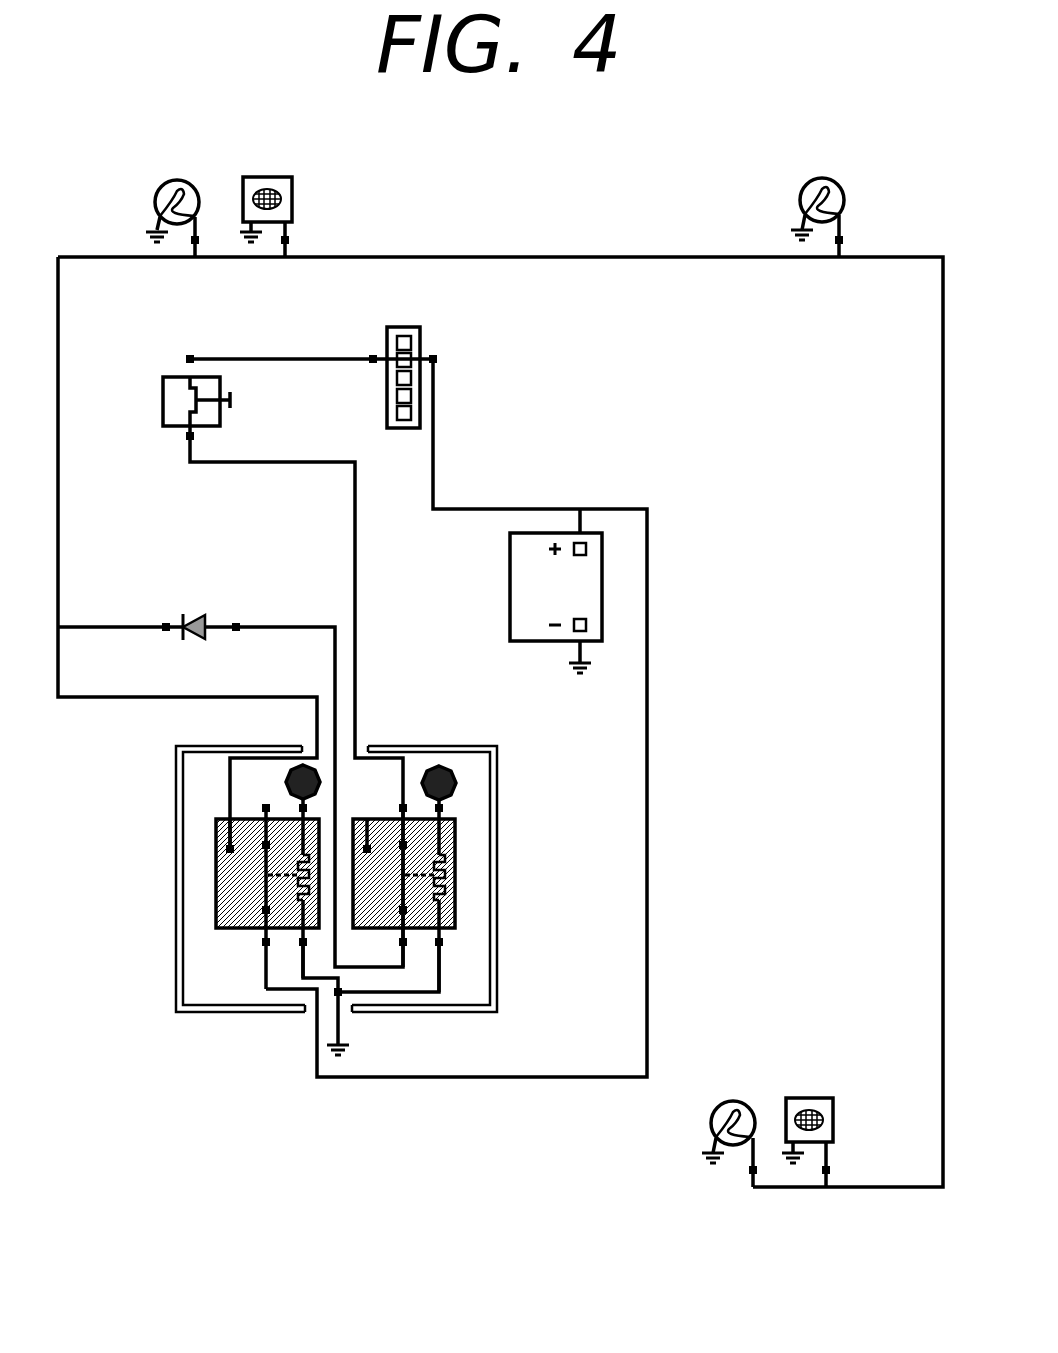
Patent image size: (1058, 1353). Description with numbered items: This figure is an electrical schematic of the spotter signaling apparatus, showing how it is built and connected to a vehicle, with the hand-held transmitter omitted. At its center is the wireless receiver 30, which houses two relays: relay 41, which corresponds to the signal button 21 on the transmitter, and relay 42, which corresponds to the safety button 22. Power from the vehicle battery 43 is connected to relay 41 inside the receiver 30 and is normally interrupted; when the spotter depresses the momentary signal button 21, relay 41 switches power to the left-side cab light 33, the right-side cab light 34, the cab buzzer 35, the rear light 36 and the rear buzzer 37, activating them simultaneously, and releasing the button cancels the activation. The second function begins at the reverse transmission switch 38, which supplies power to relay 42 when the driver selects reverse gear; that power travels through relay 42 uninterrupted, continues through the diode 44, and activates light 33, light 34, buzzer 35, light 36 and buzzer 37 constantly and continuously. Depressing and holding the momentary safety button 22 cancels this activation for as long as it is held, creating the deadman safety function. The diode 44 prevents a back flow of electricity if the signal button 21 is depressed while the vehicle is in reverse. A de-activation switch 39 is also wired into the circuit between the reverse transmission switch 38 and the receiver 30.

The signal button 21 is at (285, 778).
The safety button 22 is at (459, 779).
The wireless receiver 30 is at (230, 983).
The left-side cab light 33 is at (165, 178).
The right-side cab light 34 is at (832, 178).
The cab buzzer 35 is at (300, 190).
The rear light 36 is at (734, 1098).
The rear buzzer 37 is at (820, 1093).
The reverse transmission switch 38 is at (437, 339).
The de-activation switch 39 is at (160, 389).
The relay 41 is at (213, 846).
The relay 42 is at (459, 836).
The vehicle battery 43 is at (608, 591).
The diode 44 is at (194, 611).